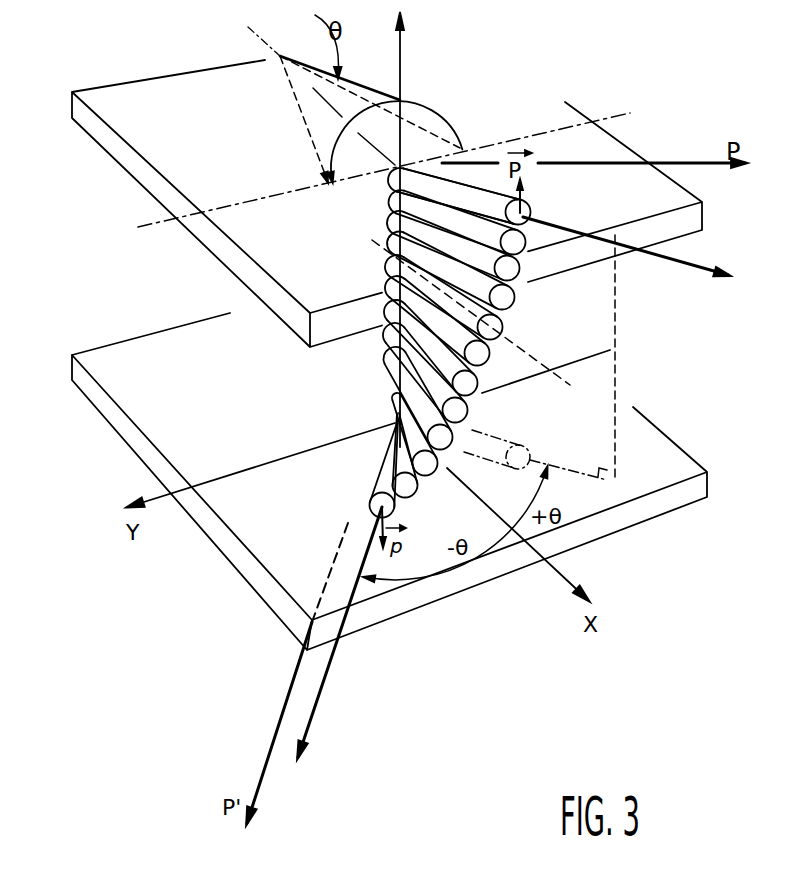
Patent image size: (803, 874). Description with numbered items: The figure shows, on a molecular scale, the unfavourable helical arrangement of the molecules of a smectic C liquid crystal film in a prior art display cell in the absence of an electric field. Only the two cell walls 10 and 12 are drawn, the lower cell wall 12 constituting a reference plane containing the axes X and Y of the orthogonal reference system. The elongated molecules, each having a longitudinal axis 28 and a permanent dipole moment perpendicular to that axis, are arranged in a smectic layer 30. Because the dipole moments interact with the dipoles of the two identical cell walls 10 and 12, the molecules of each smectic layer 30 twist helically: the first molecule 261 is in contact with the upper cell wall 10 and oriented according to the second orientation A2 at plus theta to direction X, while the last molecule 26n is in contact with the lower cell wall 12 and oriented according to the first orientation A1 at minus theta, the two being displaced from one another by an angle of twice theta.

The cell wall 10 is at (143, 95).
The cell wall 12 is at (182, 340).
The first molecule 261 is at (420, 188).
The last molecule 26n is at (372, 507).
The longitudinal axis 28 is at (528, 350).
The smectic layer 30 is at (407, 305).
The first orientation A1 is at (327, 672).
The second orientation A2 is at (647, 253).